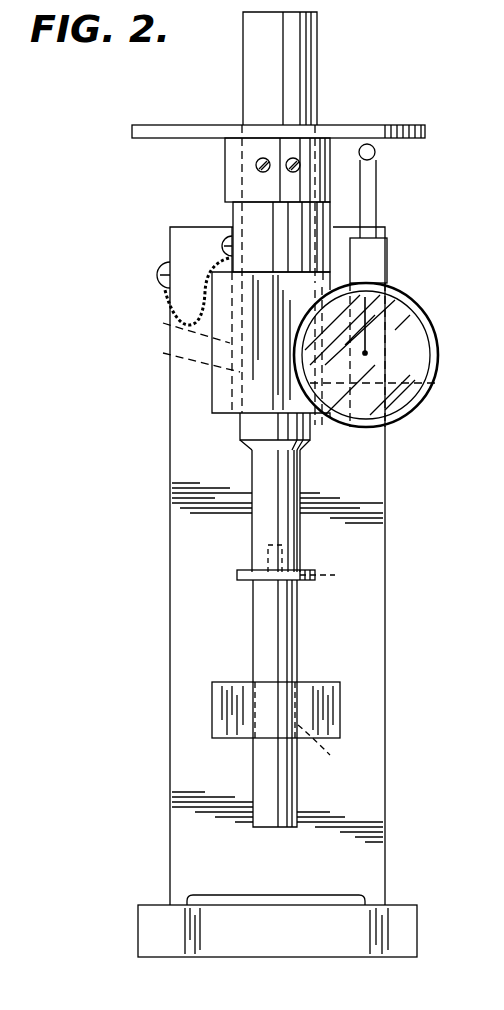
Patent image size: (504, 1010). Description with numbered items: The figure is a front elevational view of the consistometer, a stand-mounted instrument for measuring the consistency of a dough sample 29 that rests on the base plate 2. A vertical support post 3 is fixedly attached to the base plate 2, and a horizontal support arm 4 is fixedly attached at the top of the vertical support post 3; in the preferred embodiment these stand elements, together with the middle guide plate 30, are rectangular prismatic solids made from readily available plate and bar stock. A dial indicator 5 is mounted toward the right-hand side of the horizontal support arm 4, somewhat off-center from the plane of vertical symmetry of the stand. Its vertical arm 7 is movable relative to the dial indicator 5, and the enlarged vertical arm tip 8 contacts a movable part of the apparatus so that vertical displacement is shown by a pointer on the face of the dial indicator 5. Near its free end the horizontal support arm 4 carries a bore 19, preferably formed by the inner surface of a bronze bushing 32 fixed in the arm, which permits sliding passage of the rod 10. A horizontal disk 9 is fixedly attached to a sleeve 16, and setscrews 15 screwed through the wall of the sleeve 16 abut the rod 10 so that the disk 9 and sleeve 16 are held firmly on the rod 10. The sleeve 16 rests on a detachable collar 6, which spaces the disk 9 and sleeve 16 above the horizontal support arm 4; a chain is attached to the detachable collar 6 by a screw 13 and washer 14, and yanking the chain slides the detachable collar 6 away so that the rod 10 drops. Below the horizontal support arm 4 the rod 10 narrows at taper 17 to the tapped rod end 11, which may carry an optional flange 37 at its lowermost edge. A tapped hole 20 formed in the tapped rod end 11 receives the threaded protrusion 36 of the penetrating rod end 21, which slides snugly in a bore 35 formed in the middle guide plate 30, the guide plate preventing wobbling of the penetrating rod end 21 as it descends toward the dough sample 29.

The base plate 2 is at (145, 935).
The vertical support post 3 is at (178, 460).
The horizontal support arm 4 is at (247, 398).
The dial indicator 5 is at (415, 300).
The detachable collar 6 is at (233, 210).
The vertical arm 7 is at (378, 205).
The vertical arm tip 8 is at (376, 152).
The horizontal disk 9 is at (162, 125).
The rod 10 is at (248, 58).
The tapped rod end 11 is at (253, 540).
The screw 13 is at (221, 252).
The fastener washer 14 is at (230, 222).
The setscrews 15 is at (296, 160).
The sleeve 16 is at (228, 165).
The taper 17 is at (305, 450).
The bore 19 is at (351, 433).
The tapped hole 20 is at (285, 548).
The penetrating rod end 21 is at (292, 660).
The dough sample 29 is at (365, 898).
The middle guide plate 30 is at (220, 718).
The bushing 32 is at (445, 388).
The bore 35 is at (329, 750).
The threaded protrusion 36 is at (333, 568).
The flange 37 is at (238, 575).